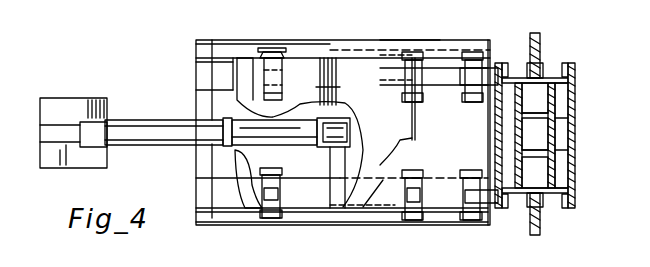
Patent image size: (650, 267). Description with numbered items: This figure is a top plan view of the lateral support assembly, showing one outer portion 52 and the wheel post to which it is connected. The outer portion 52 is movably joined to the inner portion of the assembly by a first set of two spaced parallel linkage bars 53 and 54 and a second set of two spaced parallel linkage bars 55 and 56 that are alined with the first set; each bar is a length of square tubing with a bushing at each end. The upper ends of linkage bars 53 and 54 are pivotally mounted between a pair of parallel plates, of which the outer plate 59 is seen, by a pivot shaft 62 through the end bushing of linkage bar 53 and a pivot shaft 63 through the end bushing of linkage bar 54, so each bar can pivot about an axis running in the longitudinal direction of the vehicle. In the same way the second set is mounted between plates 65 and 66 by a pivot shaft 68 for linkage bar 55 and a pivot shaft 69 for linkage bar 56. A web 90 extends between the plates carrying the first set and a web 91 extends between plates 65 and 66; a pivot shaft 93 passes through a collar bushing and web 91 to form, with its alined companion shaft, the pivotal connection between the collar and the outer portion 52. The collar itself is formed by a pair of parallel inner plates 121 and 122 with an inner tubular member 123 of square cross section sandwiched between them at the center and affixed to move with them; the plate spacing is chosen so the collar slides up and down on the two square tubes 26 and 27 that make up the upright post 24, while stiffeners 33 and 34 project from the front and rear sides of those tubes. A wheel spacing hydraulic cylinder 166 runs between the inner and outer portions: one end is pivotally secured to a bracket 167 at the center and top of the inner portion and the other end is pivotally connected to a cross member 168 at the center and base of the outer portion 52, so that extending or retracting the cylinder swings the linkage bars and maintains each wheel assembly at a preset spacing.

The upright post 24 is at (525, 237).
The tube 26 is at (550, 175).
The tube 27 is at (548, 100).
The stiffener 33 is at (538, 215).
The stiffener 34 is at (542, 50).
The outer portion 52 is at (380, 37).
The linkage bar 53 is at (253, 197).
The linkage bar 54 is at (397, 200).
The linkage bar 55 is at (255, 48).
The linkage bar 56 is at (428, 77).
The plate 59 is at (187, 209).
The pivot shaft 62 is at (272, 218).
The pivot shaft 63 is at (412, 227).
The plate 65 is at (350, 93).
The plate 66 is at (323, 55).
The pivot shaft 68 is at (273, 50).
The pivot shaft 69 is at (420, 50).
The web 90 is at (470, 190).
The web 91 is at (487, 75).
The pivot shaft 93 is at (468, 45).
The inner plate 121 is at (550, 185).
The inner plate 122 is at (513, 180).
The inner tubular member 123 is at (550, 135).
The wheel spacing hydraulic cylinder 166 is at (132, 128).
The bracket 167 is at (67, 99).
The cross member 168 is at (337, 160).